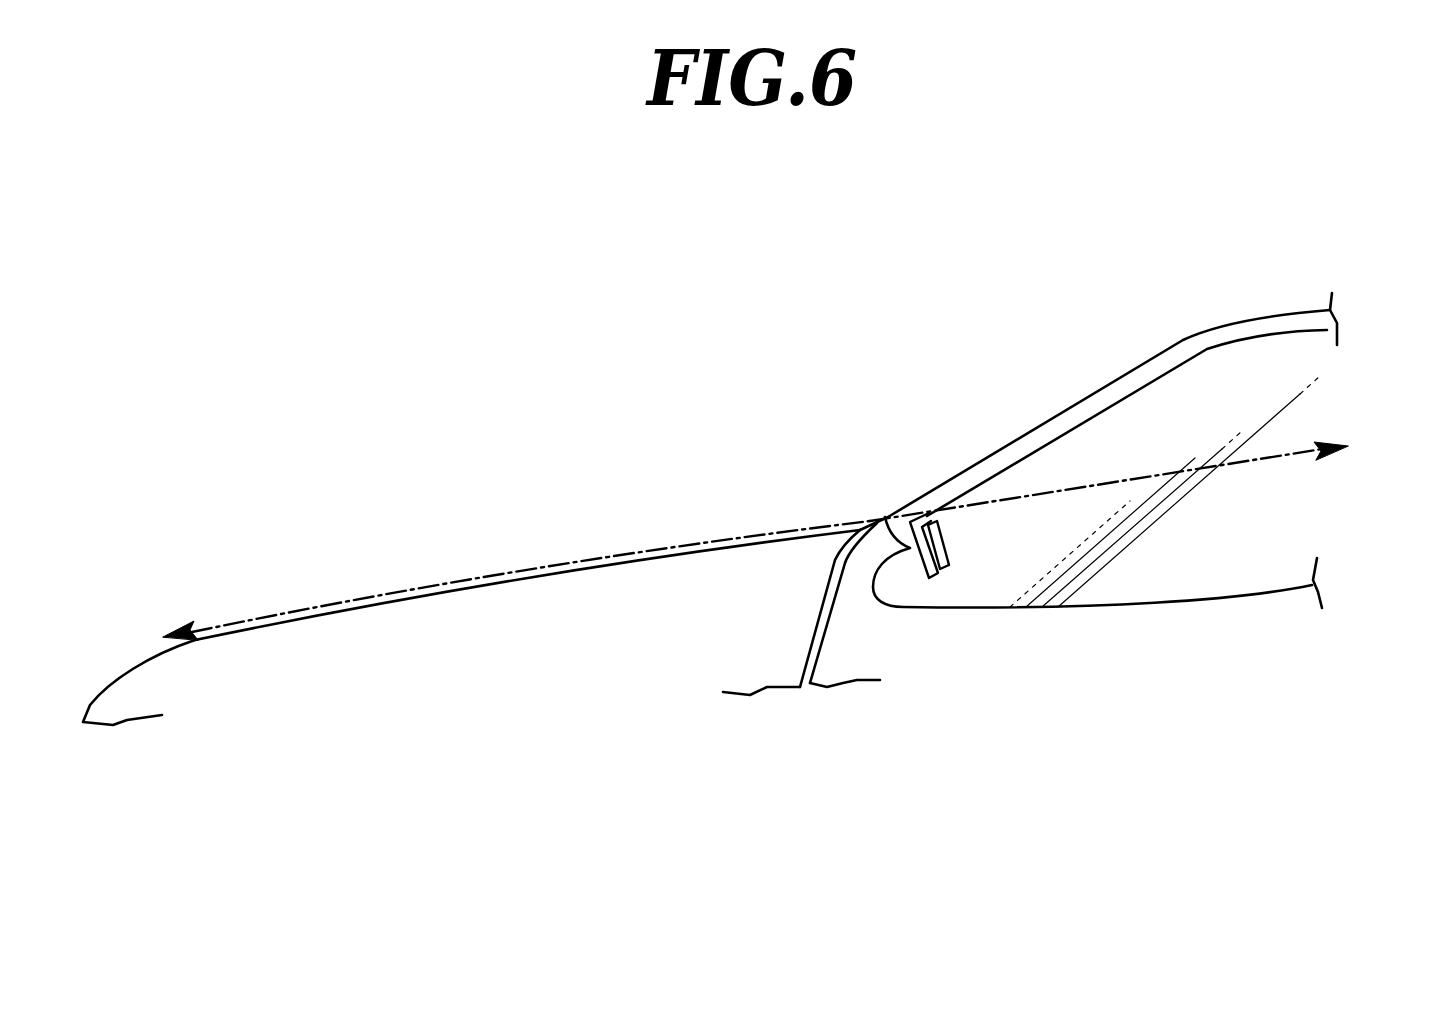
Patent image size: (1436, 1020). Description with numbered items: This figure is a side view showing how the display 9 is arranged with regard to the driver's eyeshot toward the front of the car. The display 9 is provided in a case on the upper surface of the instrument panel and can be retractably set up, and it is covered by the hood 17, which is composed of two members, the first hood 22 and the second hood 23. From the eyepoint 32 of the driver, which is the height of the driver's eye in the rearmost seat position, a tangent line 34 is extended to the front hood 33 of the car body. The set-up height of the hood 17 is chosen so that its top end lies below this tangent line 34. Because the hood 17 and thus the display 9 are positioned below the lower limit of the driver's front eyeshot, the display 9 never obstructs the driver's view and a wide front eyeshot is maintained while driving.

The display 9 is at (949, 548).
The hood 17 is at (885, 508).
The first hood 22 is at (886, 518).
The second hood 23 is at (826, 398).
The eyepoint 32 is at (1320, 447).
The front hood 33 is at (588, 612).
The tangent line 34 is at (477, 585).